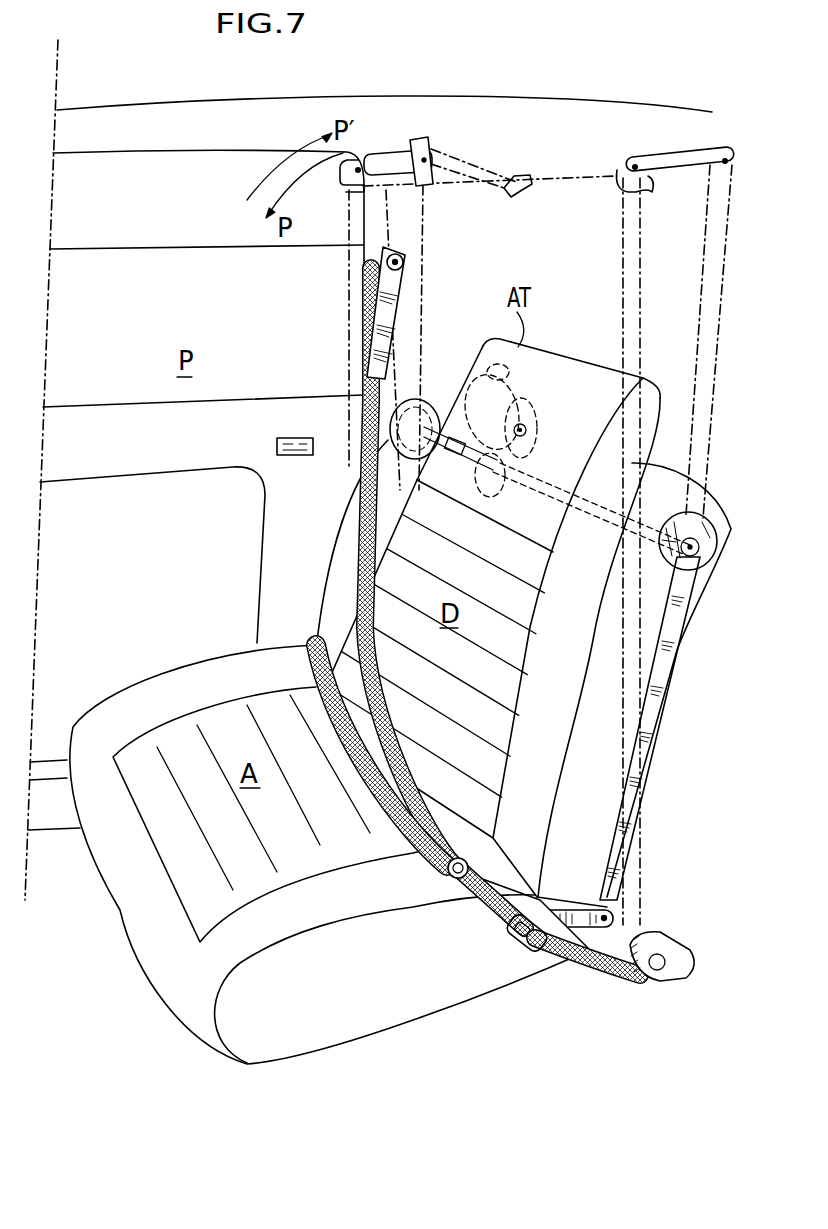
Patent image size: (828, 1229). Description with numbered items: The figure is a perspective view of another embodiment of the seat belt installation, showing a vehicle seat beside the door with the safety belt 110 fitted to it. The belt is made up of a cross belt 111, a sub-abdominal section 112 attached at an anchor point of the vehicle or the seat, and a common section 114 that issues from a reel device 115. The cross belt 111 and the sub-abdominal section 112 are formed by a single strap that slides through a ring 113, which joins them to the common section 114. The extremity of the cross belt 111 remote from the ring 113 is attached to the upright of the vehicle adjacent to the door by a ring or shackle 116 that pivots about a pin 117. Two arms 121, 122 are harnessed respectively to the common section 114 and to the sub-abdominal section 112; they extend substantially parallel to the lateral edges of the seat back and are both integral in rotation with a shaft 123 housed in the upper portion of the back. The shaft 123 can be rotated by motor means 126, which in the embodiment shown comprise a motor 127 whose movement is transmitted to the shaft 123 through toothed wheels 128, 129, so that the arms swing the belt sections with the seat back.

The safety belt 110 is at (491, 634).
The cross belt 111 is at (357, 560).
The sub-abdominal section 112 is at (407, 835).
The ring 113 is at (452, 878).
The common section 114 is at (587, 967).
The reel device 115 is at (674, 974).
The ring or shackle 116 is at (390, 313).
The pin 117 is at (403, 262).
The arm 121 is at (735, 310).
The arm 122 is at (437, 150).
The shaft 123 is at (532, 488).
The motor means 126 is at (538, 370).
The motor 127 is at (462, 380).
The toothed wheel 128 is at (540, 412).
The toothed wheel 129 is at (482, 482).